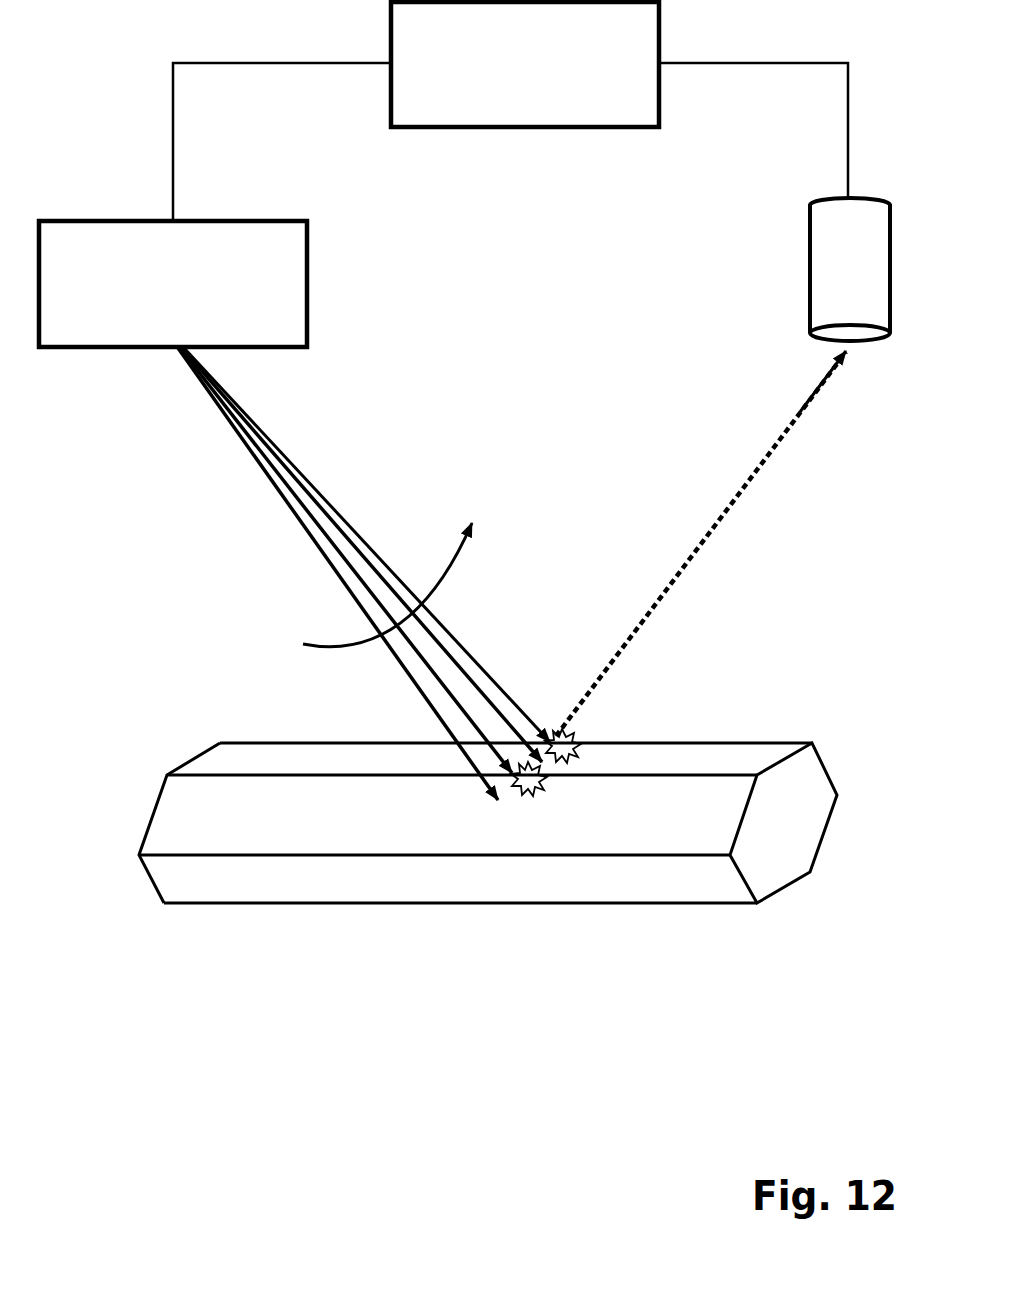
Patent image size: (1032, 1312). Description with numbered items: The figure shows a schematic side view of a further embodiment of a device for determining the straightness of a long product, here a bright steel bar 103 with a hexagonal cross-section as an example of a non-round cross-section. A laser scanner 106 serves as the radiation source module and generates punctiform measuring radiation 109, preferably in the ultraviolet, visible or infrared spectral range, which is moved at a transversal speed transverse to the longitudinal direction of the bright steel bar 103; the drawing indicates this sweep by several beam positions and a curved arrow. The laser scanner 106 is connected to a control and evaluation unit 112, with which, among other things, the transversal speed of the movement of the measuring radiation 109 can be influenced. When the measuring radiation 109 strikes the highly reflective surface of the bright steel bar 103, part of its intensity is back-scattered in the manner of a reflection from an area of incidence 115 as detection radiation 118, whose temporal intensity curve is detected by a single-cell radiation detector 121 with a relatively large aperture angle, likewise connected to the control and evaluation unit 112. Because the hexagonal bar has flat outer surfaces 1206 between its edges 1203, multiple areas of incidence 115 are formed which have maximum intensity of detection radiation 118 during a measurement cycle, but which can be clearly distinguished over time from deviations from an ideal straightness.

The bright steel bar 103 is at (790, 828).
The laser scanner 106 is at (140, 301).
The measuring radiation 109 is at (258, 482).
The control and evaluation unit 112 is at (496, 77).
The area of incidence 115 is at (583, 735).
The detection radiation 118 is at (725, 493).
The single-cell radiation detector 121 is at (840, 270).
The edges 1203 is at (242, 743).
The flat outer surfaces 1206 is at (704, 760).